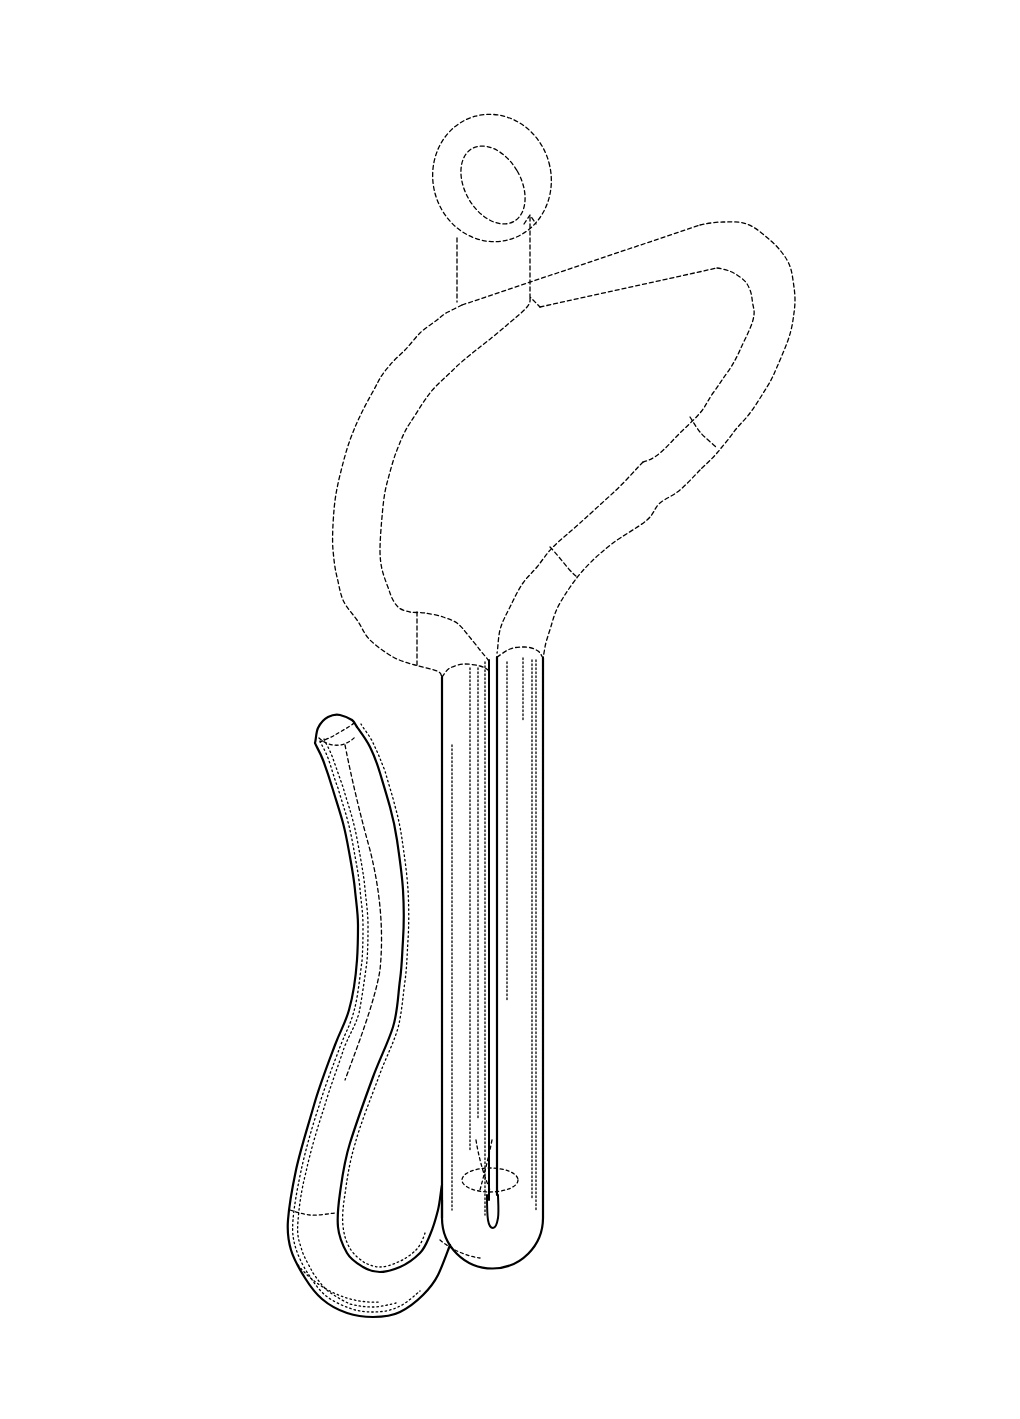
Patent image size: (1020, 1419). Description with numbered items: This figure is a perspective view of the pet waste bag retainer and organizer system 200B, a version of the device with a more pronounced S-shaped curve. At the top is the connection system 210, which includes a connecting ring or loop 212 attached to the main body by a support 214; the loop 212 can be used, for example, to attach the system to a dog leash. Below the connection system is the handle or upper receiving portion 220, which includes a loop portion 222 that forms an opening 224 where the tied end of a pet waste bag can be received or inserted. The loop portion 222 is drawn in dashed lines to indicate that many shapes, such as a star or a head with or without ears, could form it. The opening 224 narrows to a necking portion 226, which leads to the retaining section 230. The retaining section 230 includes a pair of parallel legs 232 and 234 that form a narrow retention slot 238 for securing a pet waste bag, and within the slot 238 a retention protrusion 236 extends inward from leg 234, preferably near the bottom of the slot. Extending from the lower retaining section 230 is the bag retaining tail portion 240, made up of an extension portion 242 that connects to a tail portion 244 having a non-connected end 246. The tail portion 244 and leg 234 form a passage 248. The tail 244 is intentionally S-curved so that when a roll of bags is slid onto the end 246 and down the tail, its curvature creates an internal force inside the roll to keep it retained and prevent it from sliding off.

The pet waste bag retainer and organizer system 200B is at (537, 23).
The connection system 210 is at (433, 270).
The connecting ring or loop 212 is at (543, 157).
The support 214 is at (517, 258).
The handle or upper portion or receiving portion 220 is at (293, 463).
The loop portion 222 is at (657, 257).
The opening 224 is at (657, 355).
The necking portion 226 is at (483, 595).
The retaining section 230 is at (617, 912).
The leg 232 is at (520, 783).
The leg 234 is at (470, 1043).
The retention protrusion 236 is at (485, 1158).
The retention slot 238 is at (492, 893).
The bag retaining tail portion 240 is at (242, 1007).
The extension portion 242 is at (355, 1292).
The tail portion 244 is at (373, 969).
The non-connected end 246 is at (337, 738).
The passage 248 is at (397, 1158).